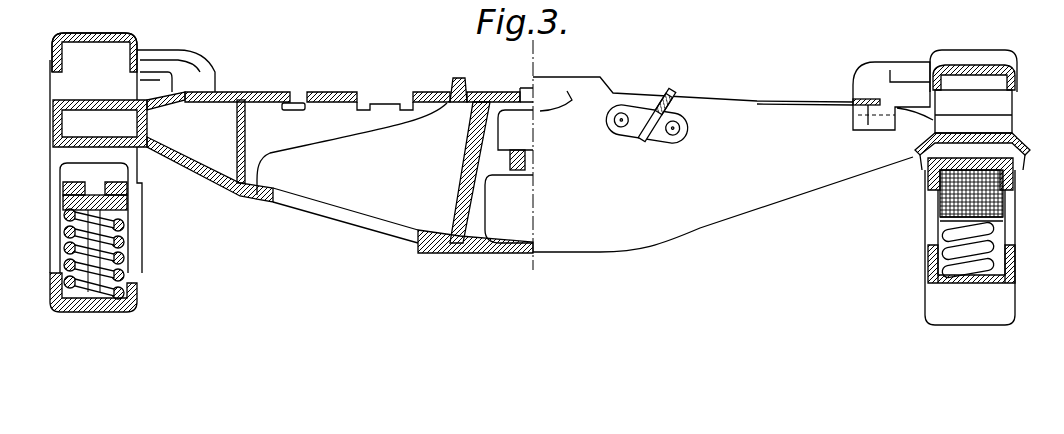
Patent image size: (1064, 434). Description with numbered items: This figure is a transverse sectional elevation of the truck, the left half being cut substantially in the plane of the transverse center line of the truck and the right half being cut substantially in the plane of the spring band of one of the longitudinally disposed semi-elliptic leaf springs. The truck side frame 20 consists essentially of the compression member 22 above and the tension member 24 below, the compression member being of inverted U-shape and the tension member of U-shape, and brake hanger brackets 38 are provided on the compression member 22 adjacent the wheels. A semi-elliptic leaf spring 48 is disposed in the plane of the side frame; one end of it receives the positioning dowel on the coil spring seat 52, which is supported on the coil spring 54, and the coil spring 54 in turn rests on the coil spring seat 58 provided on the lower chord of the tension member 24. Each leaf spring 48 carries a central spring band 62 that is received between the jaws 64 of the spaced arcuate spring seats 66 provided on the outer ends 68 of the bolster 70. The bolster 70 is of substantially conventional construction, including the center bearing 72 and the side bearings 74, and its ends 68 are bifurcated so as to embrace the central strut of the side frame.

The truck side frame 20 is at (82, 33).
The compression member 22 is at (122, 34).
The tension member 24 is at (88, 316).
The brake hanger bracket 38 is at (197, 68).
The semi-elliptic leaf spring 48 is at (123, 190).
The coil spring seat 52 is at (127, 207).
The coil spring 54 is at (123, 240).
The coil spring seat 58 is at (115, 306).
The central spring band 62 is at (1006, 214).
The jaws 64 is at (1018, 170).
The arcuate spring seat 66 is at (968, 157).
The outer end of the bolster 68 is at (87, 113).
The bolster 70 is at (327, 202).
The center bearing 72 is at (470, 90).
The side bearing 74 is at (268, 92).